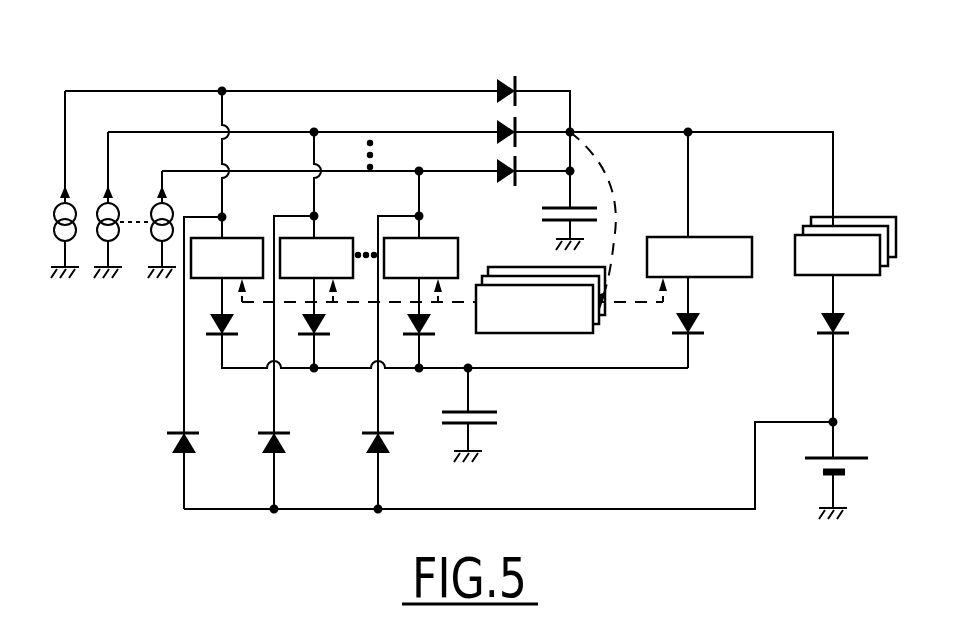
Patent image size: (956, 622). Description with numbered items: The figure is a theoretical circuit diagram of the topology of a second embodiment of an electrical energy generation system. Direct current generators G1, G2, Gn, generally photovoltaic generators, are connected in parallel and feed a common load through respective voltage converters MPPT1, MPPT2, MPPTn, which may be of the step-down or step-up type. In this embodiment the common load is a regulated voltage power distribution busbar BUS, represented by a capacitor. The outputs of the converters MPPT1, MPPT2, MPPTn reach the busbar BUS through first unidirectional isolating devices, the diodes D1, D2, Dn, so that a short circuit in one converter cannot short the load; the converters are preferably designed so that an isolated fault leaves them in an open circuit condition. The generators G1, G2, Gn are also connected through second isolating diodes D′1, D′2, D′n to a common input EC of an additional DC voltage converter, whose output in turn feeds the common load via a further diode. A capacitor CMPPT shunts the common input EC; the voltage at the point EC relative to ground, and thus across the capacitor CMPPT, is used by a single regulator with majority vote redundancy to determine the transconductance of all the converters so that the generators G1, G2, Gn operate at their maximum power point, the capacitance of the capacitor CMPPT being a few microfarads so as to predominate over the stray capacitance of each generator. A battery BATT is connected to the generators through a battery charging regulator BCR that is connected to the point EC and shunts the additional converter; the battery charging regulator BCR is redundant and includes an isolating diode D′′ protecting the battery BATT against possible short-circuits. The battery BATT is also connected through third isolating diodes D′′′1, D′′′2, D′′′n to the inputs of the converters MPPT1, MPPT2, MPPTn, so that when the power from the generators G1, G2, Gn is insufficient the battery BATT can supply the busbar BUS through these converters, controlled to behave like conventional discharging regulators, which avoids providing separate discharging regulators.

The direct current generator G1 is at (91, 196).
The direct current generator G2 is at (134, 196).
The direct current generator Gn is at (168, 210).
The second unidirectional isolating device D′1 is at (500, 85).
The second unidirectional isolating device D′2 is at (497, 124).
The second unidirectional isolating device D′n is at (497, 163).
The common input EC is at (570, 132).
The capacitor CMPPT is at (552, 222).
The voltage converter MPPT1 is at (227, 258).
The voltage converter MPPT2 is at (316, 258).
The voltage converter MPPTn is at (421, 258).
The battery charging regulator BCR is at (845, 337).
The first unidirectional isolating device D1 is at (216, 327).
The first unidirectional isolating device D2 is at (307, 325).
The first unidirectional isolating device Dn is at (412, 325).
The unidirectional isolating device D′′ is at (845, 318).
The regulated voltage power distribution busbar BUS is at (496, 415).
The third unidirectional isolating device D′′′1 is at (178, 447).
The third unidirectional isolating device D′′′2 is at (268, 447).
The third unidirectional isolating device D′′′n is at (372, 447).
The battery BATT is at (818, 468).